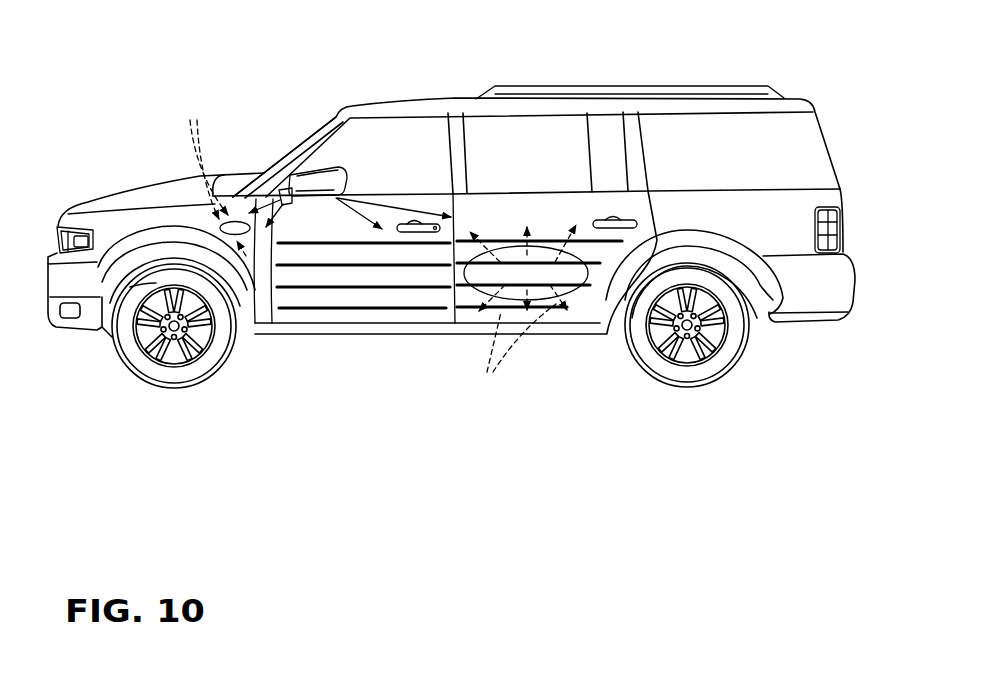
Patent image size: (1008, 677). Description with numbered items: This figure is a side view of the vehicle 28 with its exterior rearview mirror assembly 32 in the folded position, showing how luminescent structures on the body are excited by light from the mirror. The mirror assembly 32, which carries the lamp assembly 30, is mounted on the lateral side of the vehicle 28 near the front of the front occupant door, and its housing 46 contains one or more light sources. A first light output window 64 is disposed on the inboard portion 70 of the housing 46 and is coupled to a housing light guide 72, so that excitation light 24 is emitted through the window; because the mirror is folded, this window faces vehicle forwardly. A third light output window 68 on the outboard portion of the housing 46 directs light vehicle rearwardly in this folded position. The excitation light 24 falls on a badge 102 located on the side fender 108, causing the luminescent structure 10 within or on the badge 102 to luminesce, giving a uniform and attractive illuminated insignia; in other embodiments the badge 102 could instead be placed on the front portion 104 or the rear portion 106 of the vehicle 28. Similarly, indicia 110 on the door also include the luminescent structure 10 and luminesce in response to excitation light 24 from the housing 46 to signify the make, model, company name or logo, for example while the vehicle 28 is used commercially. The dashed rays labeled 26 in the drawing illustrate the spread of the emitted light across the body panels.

The luminescent structure 10 is at (271, 205).
The excitation light 24 is at (372, 205).
The projected light 26 is at (378, 244).
The vehicle 28 is at (674, 80).
The lamp assembly 30 is at (310, 178).
The exterior rearview mirror assembly 32 is at (280, 155).
The housing 46 is at (318, 166).
The first light output window 64 is at (290, 212).
The third light output window 68 is at (338, 200).
The inboard portion 70 is at (265, 210).
The housing light guide 72 is at (333, 206).
The badge 102 is at (217, 240).
The front portion 104 is at (55, 223).
The rear portion 106 is at (849, 210).
The side fender 108 is at (185, 220).
The indicia 110 is at (578, 292).